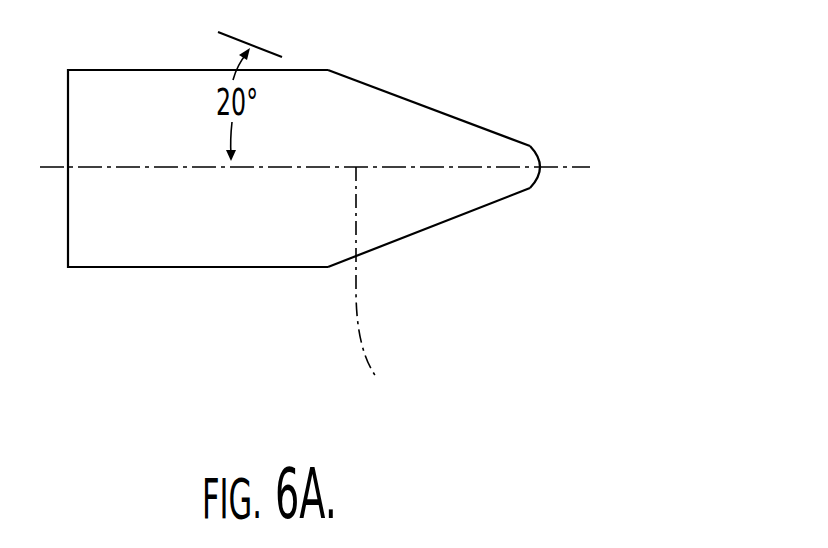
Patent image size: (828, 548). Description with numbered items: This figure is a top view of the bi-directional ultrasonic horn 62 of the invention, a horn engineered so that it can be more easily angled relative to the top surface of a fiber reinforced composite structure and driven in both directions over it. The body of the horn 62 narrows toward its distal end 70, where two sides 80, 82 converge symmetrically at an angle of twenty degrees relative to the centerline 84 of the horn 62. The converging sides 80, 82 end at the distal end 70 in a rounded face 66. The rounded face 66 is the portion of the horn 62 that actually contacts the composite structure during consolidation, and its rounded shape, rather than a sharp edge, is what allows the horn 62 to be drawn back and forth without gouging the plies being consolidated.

The horn 62 is at (195, 267).
The rounded face 66 is at (548, 181).
The distal end 70 is at (634, 163).
The side 80 is at (400, 93).
The side 82 is at (418, 232).
The centerline 84 is at (383, 286).